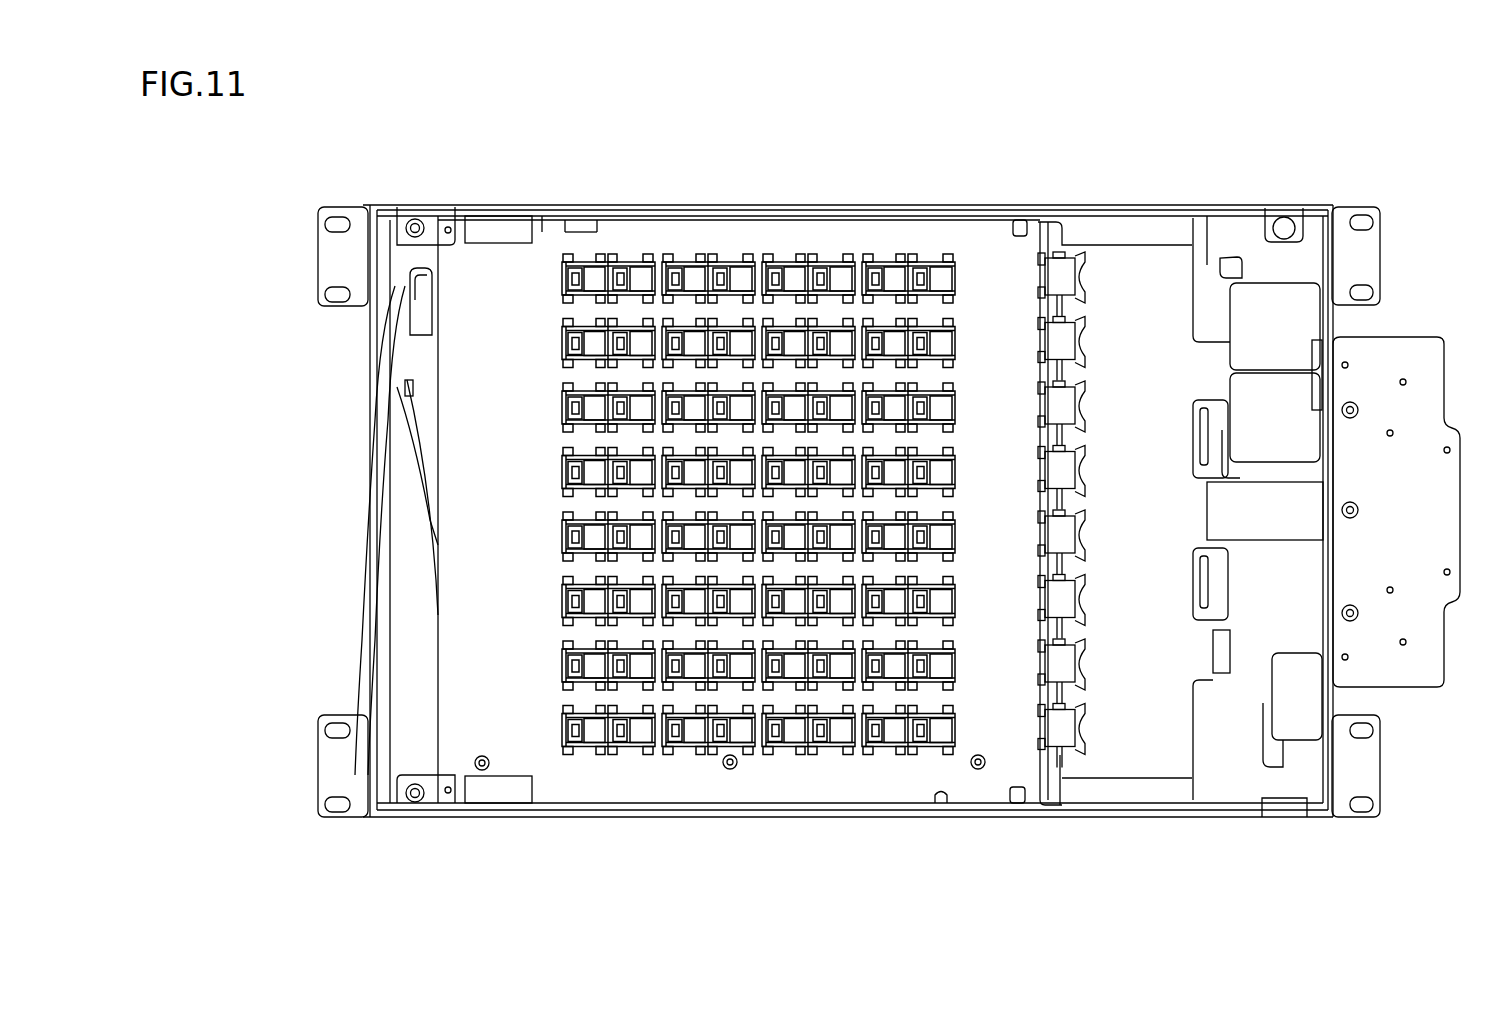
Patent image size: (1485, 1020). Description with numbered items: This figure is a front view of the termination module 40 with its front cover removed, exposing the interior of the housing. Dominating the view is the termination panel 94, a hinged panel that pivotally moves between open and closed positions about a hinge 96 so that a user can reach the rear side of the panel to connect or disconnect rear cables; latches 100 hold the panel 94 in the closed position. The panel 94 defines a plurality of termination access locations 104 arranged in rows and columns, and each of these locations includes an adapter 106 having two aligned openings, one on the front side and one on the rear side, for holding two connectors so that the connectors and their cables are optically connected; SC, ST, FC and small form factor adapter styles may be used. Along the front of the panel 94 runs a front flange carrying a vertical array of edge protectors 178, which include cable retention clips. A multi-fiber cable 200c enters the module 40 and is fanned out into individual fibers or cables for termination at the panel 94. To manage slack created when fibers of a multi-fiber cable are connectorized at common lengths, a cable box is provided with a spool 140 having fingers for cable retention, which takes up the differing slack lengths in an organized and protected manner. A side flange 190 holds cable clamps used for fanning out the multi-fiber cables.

The termination module 40 is at (428, 182).
The termination panel 94 is at (537, 283).
The hinge 96 is at (1022, 220).
The latches 100 is at (493, 225).
The termination access locations 104 is at (558, 283).
The adapters 106 is at (930, 283).
The spool 140 is at (1277, 305).
The edge protectors 178 is at (1085, 272).
The side flange 190 is at (1425, 336).
The multi-fiber cable 200c is at (385, 484).